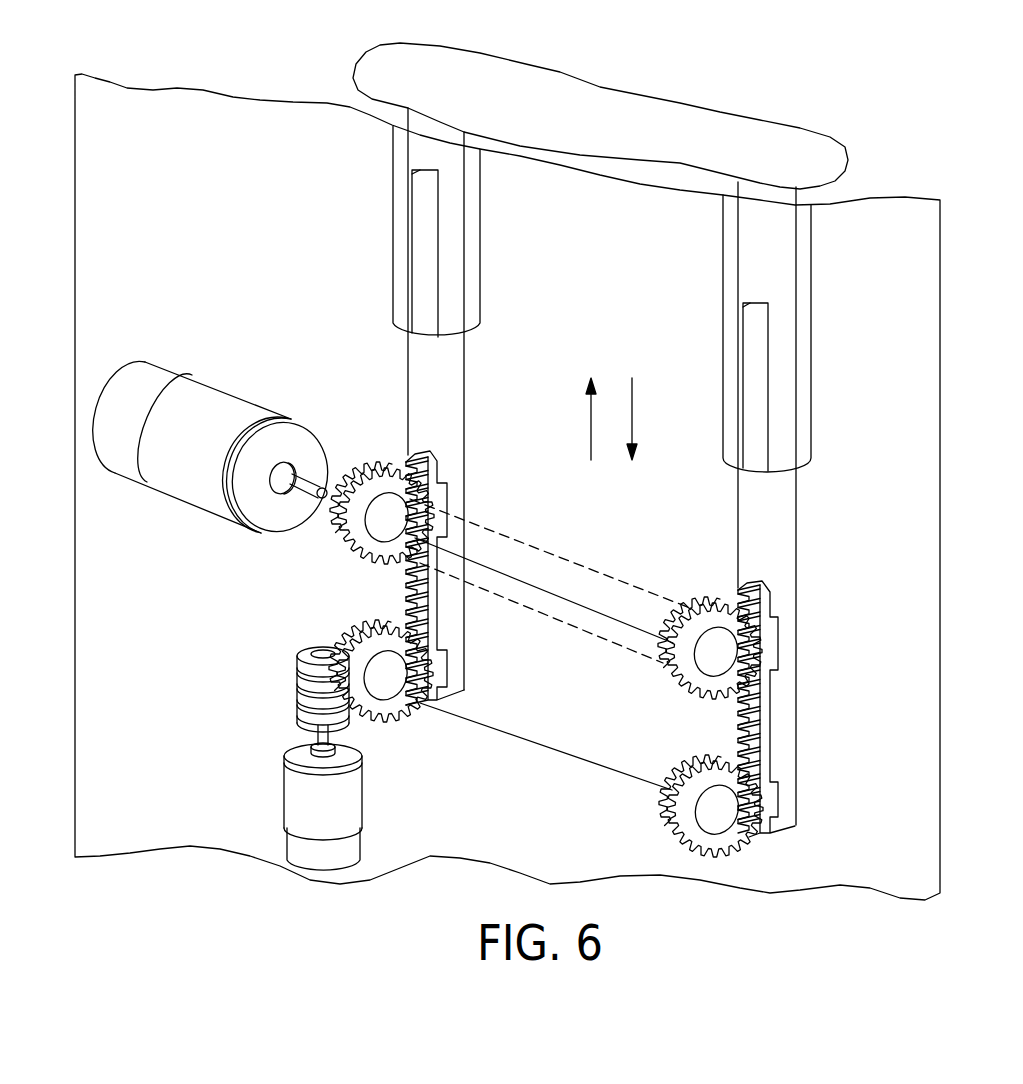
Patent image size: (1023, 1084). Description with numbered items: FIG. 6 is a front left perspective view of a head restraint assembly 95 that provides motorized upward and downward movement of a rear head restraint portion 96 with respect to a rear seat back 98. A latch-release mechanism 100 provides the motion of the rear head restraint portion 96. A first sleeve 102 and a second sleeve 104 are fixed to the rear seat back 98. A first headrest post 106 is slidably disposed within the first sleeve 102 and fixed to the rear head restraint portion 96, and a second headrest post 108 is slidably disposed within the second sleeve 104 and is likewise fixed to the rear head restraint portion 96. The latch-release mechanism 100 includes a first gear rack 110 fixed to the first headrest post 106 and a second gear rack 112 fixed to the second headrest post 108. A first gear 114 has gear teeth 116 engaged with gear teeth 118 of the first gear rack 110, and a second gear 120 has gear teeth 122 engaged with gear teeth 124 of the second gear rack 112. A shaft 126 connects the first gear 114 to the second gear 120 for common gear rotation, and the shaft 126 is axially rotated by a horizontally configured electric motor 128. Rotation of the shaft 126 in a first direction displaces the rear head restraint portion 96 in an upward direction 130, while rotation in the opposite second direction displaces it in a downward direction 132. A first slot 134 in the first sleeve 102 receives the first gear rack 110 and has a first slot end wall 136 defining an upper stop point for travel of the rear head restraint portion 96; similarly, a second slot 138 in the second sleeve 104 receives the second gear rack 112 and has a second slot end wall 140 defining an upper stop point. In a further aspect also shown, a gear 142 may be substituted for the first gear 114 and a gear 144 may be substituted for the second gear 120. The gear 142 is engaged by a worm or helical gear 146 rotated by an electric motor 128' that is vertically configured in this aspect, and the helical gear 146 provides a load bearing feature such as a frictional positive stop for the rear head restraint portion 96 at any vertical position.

The head restraint assembly 95 is at (904, 166).
The rear head restraint portion 96 is at (666, 114).
The rear seat back 98 is at (925, 347).
The latch-release mechanism 100 is at (318, 375).
The first sleeve 102 is at (483, 203).
The second sleeve 104 is at (812, 240).
The first headrest post 106 is at (452, 397).
The second headrest post 108 is at (783, 524).
The first gear rack 110 is at (433, 614).
The second gear rack 112 is at (783, 741).
The first gear 114 is at (384, 466).
The gear teeth 116 is at (342, 548).
The gear teeth 118 is at (405, 600).
The second gear 120 is at (708, 603).
The gear teeth 122 is at (670, 674).
The gear teeth 124 is at (738, 733).
The shaft 126 is at (542, 552).
The electric motor 128 is at (216, 449).
The electric motor 128' is at (356, 806).
The upward direction 130 is at (588, 427).
The downward direction 132 is at (633, 410).
The first slot 134 is at (438, 277).
The first slot end wall 136 is at (426, 171).
The second slot 138 is at (778, 397).
The second slot end wall 140 is at (757, 307).
The gear 142 is at (398, 707).
The gear 144 is at (672, 832).
The helical gear 146 is at (297, 687).